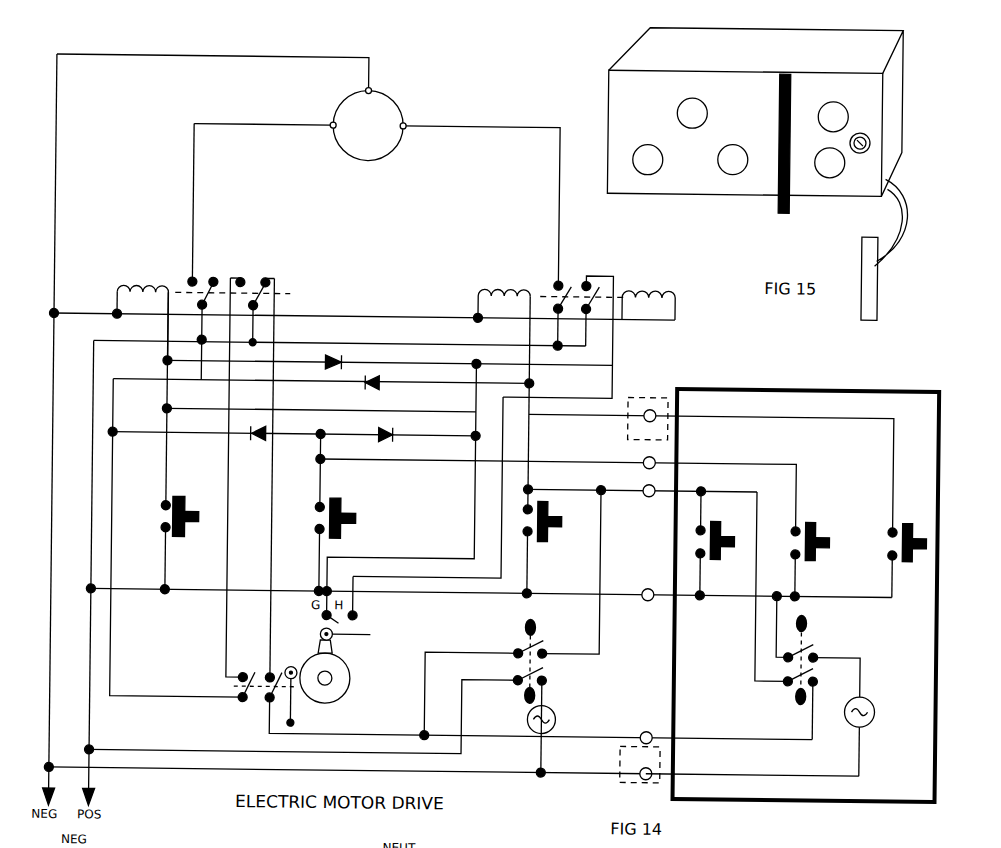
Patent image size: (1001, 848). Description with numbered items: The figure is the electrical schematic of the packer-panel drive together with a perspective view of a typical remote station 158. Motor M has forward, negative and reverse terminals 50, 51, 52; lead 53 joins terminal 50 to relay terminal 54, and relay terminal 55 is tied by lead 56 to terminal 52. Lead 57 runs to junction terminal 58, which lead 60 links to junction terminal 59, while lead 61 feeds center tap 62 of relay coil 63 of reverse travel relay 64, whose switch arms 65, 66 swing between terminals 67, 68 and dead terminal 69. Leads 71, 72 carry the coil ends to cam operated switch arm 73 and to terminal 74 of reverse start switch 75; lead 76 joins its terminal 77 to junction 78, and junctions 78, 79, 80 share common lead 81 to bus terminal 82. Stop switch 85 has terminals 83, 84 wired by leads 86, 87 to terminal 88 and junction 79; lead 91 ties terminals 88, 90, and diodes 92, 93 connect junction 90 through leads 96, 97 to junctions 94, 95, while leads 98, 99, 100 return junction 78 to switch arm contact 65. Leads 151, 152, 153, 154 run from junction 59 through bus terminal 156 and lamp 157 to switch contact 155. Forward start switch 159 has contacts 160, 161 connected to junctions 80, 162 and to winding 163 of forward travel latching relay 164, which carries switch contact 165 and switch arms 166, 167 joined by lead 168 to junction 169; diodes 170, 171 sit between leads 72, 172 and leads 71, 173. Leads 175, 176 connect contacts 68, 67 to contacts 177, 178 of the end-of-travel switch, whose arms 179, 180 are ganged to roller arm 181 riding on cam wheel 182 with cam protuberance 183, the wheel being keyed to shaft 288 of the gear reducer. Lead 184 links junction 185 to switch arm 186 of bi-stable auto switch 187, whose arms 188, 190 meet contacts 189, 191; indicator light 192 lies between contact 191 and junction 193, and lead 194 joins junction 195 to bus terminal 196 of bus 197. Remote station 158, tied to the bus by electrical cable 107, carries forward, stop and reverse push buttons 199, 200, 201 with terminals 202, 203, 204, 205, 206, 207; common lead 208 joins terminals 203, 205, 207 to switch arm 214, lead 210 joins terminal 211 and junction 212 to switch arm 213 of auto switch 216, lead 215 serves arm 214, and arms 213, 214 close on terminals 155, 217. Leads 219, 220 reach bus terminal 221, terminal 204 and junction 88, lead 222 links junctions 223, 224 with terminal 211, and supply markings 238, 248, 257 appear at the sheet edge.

In FIG. 14, the forward terminal 50 is at (404, 112).
In FIG. 14, the negative terminal 51 is at (372, 86).
In FIG. 14, the reverse terminal 52 is at (328, 126).
In FIG. 14, the lead 53 is at (524, 116).
In FIG. 14, the relay terminal 54 is at (556, 274).
In FIG. 14, the relay terminal 55 is at (190, 260).
In FIG. 14, the lead 56 is at (190, 157).
In FIG. 14, the lead 57 is at (232, 52).
In FIG. 14, the junction terminal 58 is at (58, 318).
In FIG. 14, the junction terminal 59 is at (58, 748).
In FIG. 14, the lead 60 is at (56, 545).
In FIG. 14, the lead 61 is at (80, 312).
In FIG. 14, the center tap 62 is at (116, 314).
In FIG. 14, the relay coil 63 is at (132, 286).
In FIG. 14, the reverse travel relay 64 is at (174, 310).
In FIG. 14, the switch arm 65 is at (196, 277).
In FIG. 14, the switch arm 66 is at (243, 277).
In FIG. 14, the terminal 67 is at (270, 277).
In FIG. 14, the terminal 68 is at (249, 314).
In FIG. 14, the dead terminal 69 is at (215, 279).
In FIG. 14, the lead 71 is at (118, 508).
In FIG. 14, the lead 72 is at (170, 490).
In FIG. 14, the cam operated switch arm 73 is at (252, 668).
In FIG. 14, the terminal 74 is at (190, 496).
In FIG. 14, the reverse start switch 75 is at (190, 544).
In FIG. 14, the lead 76 is at (172, 587).
In FIG. 14, the terminal 77 is at (164, 530).
In FIG. 14, the junction 78 is at (146, 592).
In FIG. 14, the junction 79 is at (320, 580).
In FIG. 14, the junction 80 is at (534, 584).
In FIG. 14, the common lead 81 is at (496, 592).
In FIG. 14, the bus terminal 82 is at (650, 582).
In FIG. 14, the terminal 83 is at (334, 494).
In FIG. 14, the terminal 84 is at (316, 525).
In FIG. 14, the stop switch 85 is at (358, 508).
In FIG. 14, the lead 86 is at (310, 486).
In FIG. 14, the lead 87 is at (318, 548).
In FIG. 14, the terminal 88 is at (318, 455).
In FIG. 14, the terminal 90 is at (326, 429).
In FIG. 14, the lead 91 is at (330, 456).
In FIG. 14, the diode 92 is at (258, 426).
In FIG. 14, the diode 93 is at (396, 428).
In FIG. 14, the junction 94 is at (116, 428).
In FIG. 14, the junction 95 is at (479, 432).
In FIG. 14, the lead 96 is at (116, 448).
In FIG. 14, the lead 97 is at (430, 456).
In FIG. 14, the electrical lead 98 is at (128, 580).
In FIG. 14, the electrical lead 99 is at (92, 506).
In FIG. 14, the electrical lead 100 is at (209, 332).
In FIG. 15, the cable 107 is at (870, 183).
In FIG. 14, the lead 151 is at (226, 768).
In FIG. 14, the lead 152 is at (572, 766).
In FIG. 14, the lead 153 is at (702, 766).
In FIG. 14, the lead 154 is at (866, 681).
In FIG. 14, the switch contact 155 is at (836, 652).
In FIG. 14, the bus terminal 156 is at (654, 776).
In FIG. 14, the lamp 157 is at (876, 722).
In FIG. 14, the remote station 158 is at (790, 382).
In FIG. 15, the remote station 158 is at (640, 22).
In FIG. 14, the forward start push-button switch 159 is at (556, 514).
In FIG. 14, the contact 160 is at (516, 506).
In FIG. 14, the contact 161 is at (532, 530).
In FIG. 14, the junction 162 is at (540, 392).
In FIG. 14, the winding 163 is at (478, 288).
In FIG. 14, the forward travel latching relay 164 is at (652, 282).
In FIG. 14, the switch contact 165 is at (584, 275).
In FIG. 14, the switch arm 166 is at (565, 330).
In FIG. 14, the switch arm 167 is at (599, 327).
In FIG. 14, the lead 168 is at (426, 342).
In FIG. 14, the junction 169 is at (388, 356).
In FIG. 14, the diode 170 is at (344, 356).
In FIG. 14, the diode 171 is at (380, 385).
In FIG. 14, the lead 172 is at (525, 377).
In FIG. 14, the lead 173 is at (532, 422).
In FIG. 14, the lead 175 is at (232, 512).
In FIG. 14, the lead 176 is at (286, 504).
In FIG. 14, the contact 177 is at (244, 666).
In FIG. 14, the contact 178 is at (276, 664).
In FIG. 14, the switch arm 179 is at (240, 684).
In FIG. 14, the switch arm 180 is at (268, 700).
In FIG. 14, the roller arm 181 is at (298, 718).
In FIG. 14, the cam wheel 182 is at (352, 686).
In FIG. 14, the cam protuberance 183 is at (340, 636).
In FIG. 14, the lead 184 is at (292, 750).
In FIG. 14, the junction 185 is at (100, 749).
In FIG. 14, the switch arm 186 is at (510, 674).
In FIG. 14, the auto switch 187 is at (542, 620).
In FIG. 14, the switch arm 188 is at (550, 640).
In FIG. 14, the contact 189 is at (552, 652).
In FIG. 14, the switch arm 190 is at (550, 664).
In FIG. 14, the contact 191 is at (552, 680).
In FIG. 14, the indicator light 192 is at (530, 716).
In FIG. 14, the junction 193 is at (544, 772).
In FIG. 14, the lead 194 is at (594, 730).
In FIG. 14, the junction 195 is at (541, 697).
In FIG. 14, the bus terminal 196 is at (654, 724).
In FIG. 14, the bus 197 is at (636, 391).
In FIG. 15, the bus 197 is at (860, 296).
In FIG. 14, the forward start push button 199 is at (740, 520).
In FIG. 15, the forward start push button 199 is at (734, 168).
In FIG. 14, the stop push button 200 is at (818, 518).
In FIG. 15, the stop push button 200 is at (676, 100).
In FIG. 14, the reverse start push button 201 is at (896, 516).
In FIG. 15, the reverse start push button 201 is at (646, 168).
In FIG. 14, the terminal 202 is at (704, 518).
In FIG. 14, the terminal 203 is at (698, 596).
In FIG. 14, the terminal 204 is at (800, 514).
In FIG. 14, the terminal 205 is at (794, 548).
In FIG. 14, the terminal 206 is at (890, 524).
In FIG. 14, the terminal 207 is at (890, 550).
In FIG. 14, the common lead 208 is at (880, 595).
In FIG. 14, the lead 210 is at (760, 620).
In FIG. 14, the terminal 211 is at (653, 489).
In FIG. 14, the junction 212 is at (706, 484).
In FIG. 14, the switch arm 213 is at (790, 680).
In FIG. 14, the switch arm 214 is at (776, 647).
In FIG. 14, the lead 215 is at (784, 617).
In FIG. 14, the auto switch 216 is at (810, 618).
In FIG. 15, the auto switch 216 is at (830, 170).
In FIG. 14, the terminal 217 is at (822, 676).
In FIG. 14, the lead 219 is at (748, 410).
In FIG. 14, the lead 220 is at (476, 510).
In FIG. 14, the bus terminal 221 is at (654, 449).
In FIG. 14, the lead 222 is at (560, 484).
In FIG. 14, the junction 223 is at (634, 483).
In FIG. 14, the junction 224 is at (606, 484).
In FIG. 14, the conductor 238 is at (104, 843).
In FIG. 14, the conductor 248 is at (756, 847).
In FIG. 14, the conductor 257 is at (517, 845).
In FIG. 14, the shaft 288 is at (332, 680).